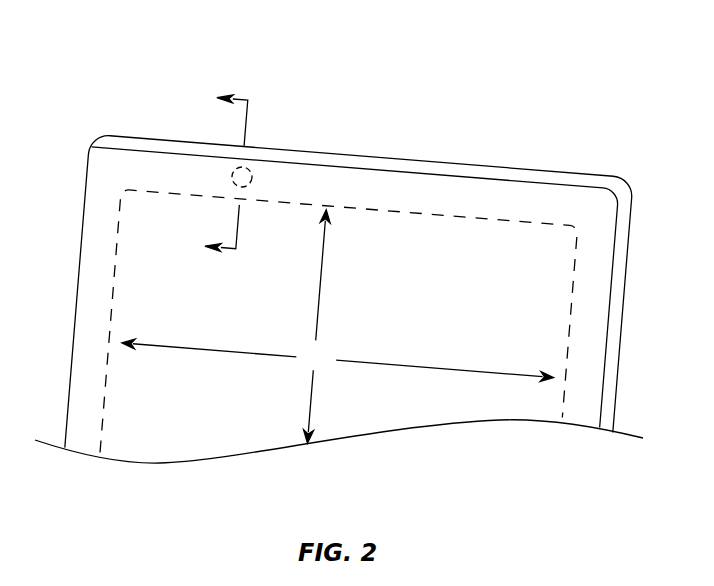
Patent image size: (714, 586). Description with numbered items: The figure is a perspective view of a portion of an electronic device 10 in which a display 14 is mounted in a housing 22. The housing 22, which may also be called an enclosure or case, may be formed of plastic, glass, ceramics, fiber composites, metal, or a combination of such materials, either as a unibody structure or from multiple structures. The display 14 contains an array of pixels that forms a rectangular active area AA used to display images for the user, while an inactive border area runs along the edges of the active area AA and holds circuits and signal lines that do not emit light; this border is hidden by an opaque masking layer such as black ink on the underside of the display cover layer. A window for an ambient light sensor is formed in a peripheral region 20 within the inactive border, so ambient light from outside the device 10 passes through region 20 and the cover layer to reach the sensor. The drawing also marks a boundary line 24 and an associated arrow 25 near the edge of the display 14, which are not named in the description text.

The electronic device 10 is at (345, 287).
The housing 22 is at (349, 312).
The display 14 is at (339, 339).
The region 20 is at (242, 177).
The edge of display 24 is at (234, 174).
The direction arrow 25 is at (219, 173).
The active area AA is at (340, 328).